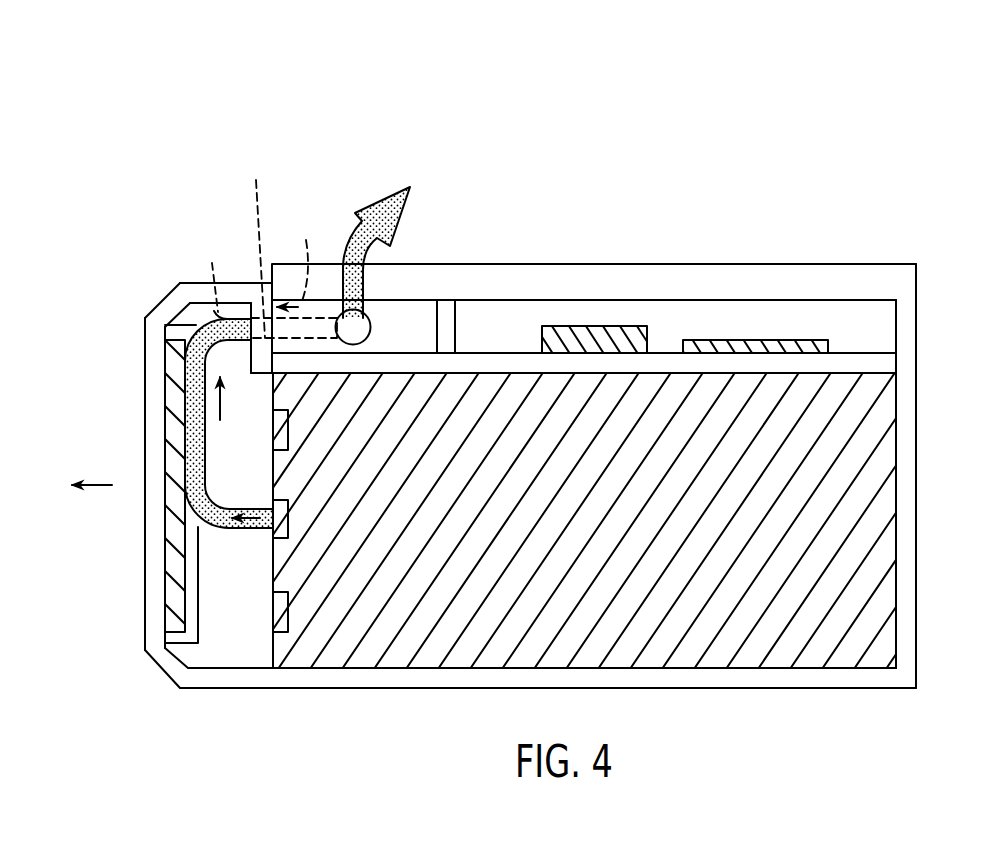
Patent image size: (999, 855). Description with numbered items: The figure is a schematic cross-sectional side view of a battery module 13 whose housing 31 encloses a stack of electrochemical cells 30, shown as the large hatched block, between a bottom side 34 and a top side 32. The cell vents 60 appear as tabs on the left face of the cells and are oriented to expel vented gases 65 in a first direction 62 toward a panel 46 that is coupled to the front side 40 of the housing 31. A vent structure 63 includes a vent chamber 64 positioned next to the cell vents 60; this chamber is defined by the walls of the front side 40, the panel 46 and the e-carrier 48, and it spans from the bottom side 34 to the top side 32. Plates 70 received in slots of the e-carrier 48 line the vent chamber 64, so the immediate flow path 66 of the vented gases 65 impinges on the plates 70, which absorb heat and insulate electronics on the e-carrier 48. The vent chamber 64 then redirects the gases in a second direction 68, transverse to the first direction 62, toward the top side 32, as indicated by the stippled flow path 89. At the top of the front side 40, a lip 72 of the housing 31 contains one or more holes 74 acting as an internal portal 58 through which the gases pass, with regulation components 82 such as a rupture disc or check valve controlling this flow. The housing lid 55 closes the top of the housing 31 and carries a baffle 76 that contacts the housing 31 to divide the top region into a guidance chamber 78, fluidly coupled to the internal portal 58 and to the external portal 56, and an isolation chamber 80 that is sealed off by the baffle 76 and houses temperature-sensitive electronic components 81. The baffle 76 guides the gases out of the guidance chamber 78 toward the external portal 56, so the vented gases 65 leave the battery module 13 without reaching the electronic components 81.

The battery module 13 is at (761, 166).
The electrochemical cells 30 is at (422, 674).
The housing 31 is at (924, 477).
The top side 32 is at (188, 235).
The bottom side 34 is at (372, 729).
The front side 40 is at (143, 295).
The panel 46 is at (141, 535).
The e-carrier 48 is at (177, 315).
The housing lid 55 is at (640, 264).
The external portal 56 is at (372, 329).
The internal portal 58 is at (214, 279).
The cell vents 60 is at (274, 612).
The first direction 62 is at (97, 485).
The vent structure 63 is at (176, 112).
The vent chamber 64 is at (206, 653).
The vented gases 65 is at (246, 532).
The immediate flow path 66 is at (250, 512).
The second direction 68 is at (223, 399).
The plates 70 is at (188, 568).
The lip 72 is at (255, 306).
The holes 74 is at (259, 247).
The baffle 76 is at (455, 327).
The guidance chamber 78 is at (418, 331).
The isolation chamber 80 is at (875, 324).
The electronic components 81 is at (758, 340).
The regulation components 82 is at (309, 260).
The flow path 89 is at (346, 246).